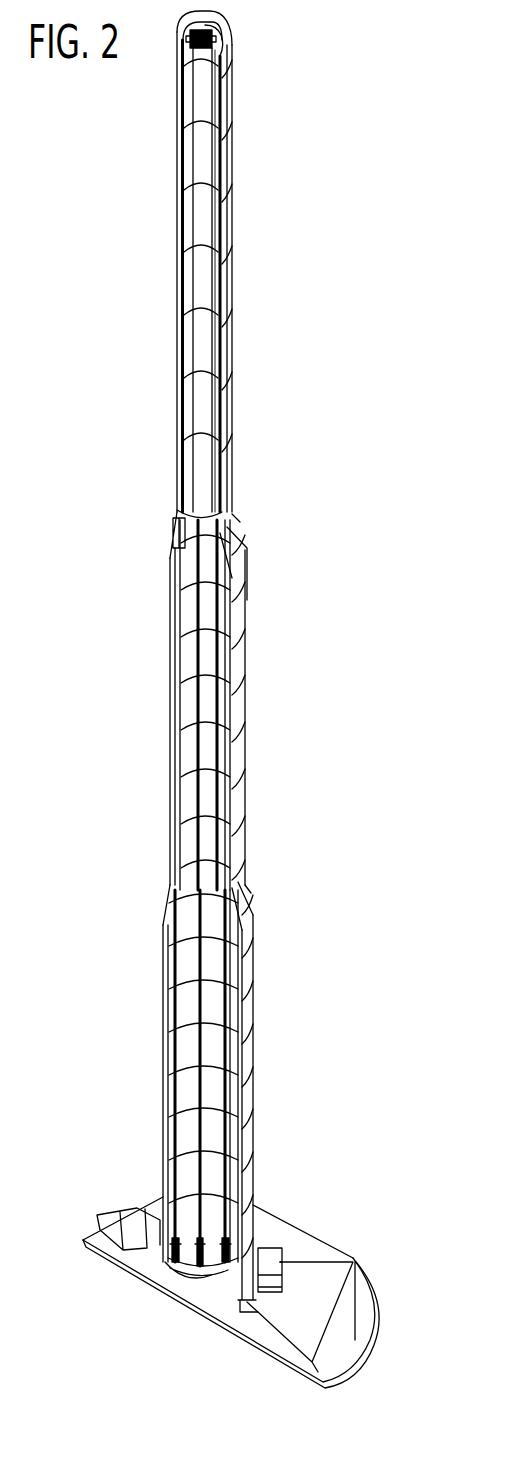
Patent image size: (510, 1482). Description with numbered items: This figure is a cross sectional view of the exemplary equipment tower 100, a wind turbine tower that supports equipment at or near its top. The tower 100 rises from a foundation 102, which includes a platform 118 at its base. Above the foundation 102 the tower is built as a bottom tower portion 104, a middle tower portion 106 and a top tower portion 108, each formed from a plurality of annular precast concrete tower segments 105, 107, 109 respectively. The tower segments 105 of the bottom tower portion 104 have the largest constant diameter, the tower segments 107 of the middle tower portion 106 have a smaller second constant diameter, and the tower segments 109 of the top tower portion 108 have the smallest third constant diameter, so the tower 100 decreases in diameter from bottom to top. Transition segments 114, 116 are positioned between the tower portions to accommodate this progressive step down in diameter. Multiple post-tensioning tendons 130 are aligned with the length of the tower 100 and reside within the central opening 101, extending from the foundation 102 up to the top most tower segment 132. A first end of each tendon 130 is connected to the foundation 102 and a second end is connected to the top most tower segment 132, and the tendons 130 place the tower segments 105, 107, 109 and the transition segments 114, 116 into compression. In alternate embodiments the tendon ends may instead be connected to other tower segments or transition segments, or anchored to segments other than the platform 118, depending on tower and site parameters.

The equipment tower 100 is at (122, 152).
The central opening 101 is at (190, 1140).
The foundation 102 is at (308, 1212).
The bottom tower portion 104 is at (147, 1068).
The tower segments 105 is at (252, 958).
The middle tower portion 106 is at (147, 718).
The tower segments 107 is at (240, 606).
The top tower portion 108 is at (154, 310).
The tower segments 109 is at (230, 188).
The transition segment 114 is at (243, 913).
The transition segment 116 is at (235, 556).
The platform 118 is at (205, 1270).
The post-tensioning tendons 130 is at (185, 437).
The top most tower segment 132 is at (230, 52).